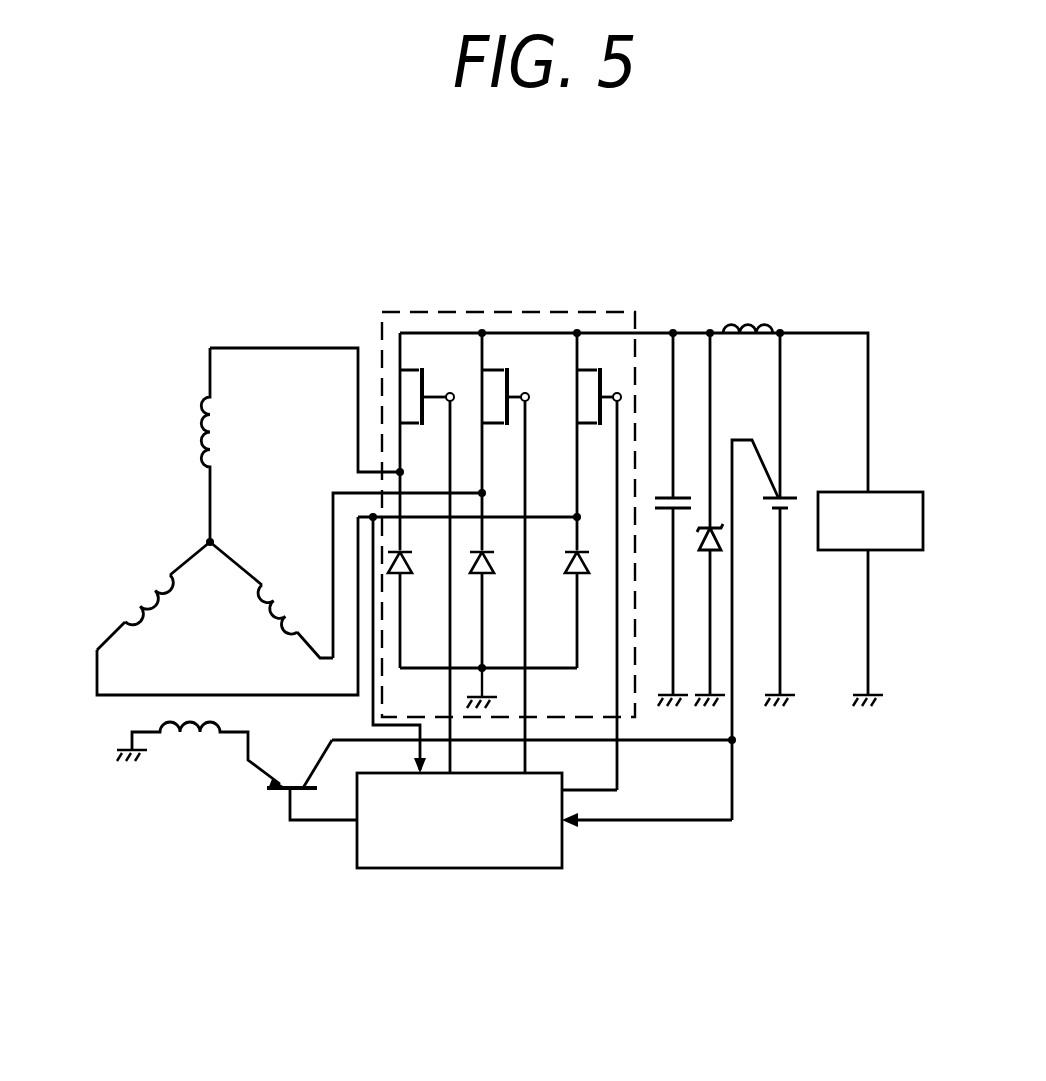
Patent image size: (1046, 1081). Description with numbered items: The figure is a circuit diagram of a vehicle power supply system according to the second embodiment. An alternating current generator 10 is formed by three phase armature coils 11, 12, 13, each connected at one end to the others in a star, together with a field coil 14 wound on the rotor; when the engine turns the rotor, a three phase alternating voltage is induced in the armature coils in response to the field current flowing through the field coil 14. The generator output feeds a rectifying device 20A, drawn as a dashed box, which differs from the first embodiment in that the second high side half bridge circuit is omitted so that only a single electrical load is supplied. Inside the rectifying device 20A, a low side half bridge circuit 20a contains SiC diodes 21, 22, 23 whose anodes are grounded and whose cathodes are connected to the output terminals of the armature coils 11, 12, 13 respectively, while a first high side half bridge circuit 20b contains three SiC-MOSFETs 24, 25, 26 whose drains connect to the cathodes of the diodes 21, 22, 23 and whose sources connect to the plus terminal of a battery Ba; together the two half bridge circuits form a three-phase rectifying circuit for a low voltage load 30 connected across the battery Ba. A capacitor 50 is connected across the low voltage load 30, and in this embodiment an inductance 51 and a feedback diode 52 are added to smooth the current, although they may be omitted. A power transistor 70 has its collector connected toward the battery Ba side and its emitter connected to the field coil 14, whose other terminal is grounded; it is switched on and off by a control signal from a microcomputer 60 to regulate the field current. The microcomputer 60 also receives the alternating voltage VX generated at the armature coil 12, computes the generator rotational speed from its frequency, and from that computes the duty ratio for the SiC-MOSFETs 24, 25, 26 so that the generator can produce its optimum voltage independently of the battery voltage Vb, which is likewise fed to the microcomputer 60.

The alternating current generator 10 is at (145, 705).
The armature coil 11 is at (220, 423).
The armature coil 12 is at (263, 585).
The armature coil 13 is at (152, 588).
The field coil 14 is at (203, 738).
The rectifying device 20A is at (535, 310).
The low side half bridge circuit 20a is at (551, 667).
The first high side half bridge circuit 20b is at (521, 518).
The diode 21 is at (405, 574).
The diode 22 is at (486, 575).
The diode 23 is at (598, 633).
The SiC-MOSFET 24 is at (423, 363).
The SiC-MOSFET 25 is at (507, 363).
The SiC-MOSFET 26 is at (598, 372).
The low voltage load 30 is at (893, 492).
The capacitor 50 is at (658, 494).
The inductance 51 is at (743, 325).
The feedback diode 52 is at (716, 528).
The microcomputer 60 is at (400, 870).
The power transistor 70 is at (288, 793).
The battery Ba is at (787, 490).
The battery voltage Vb is at (733, 530).
The alternating voltage VX is at (372, 707).